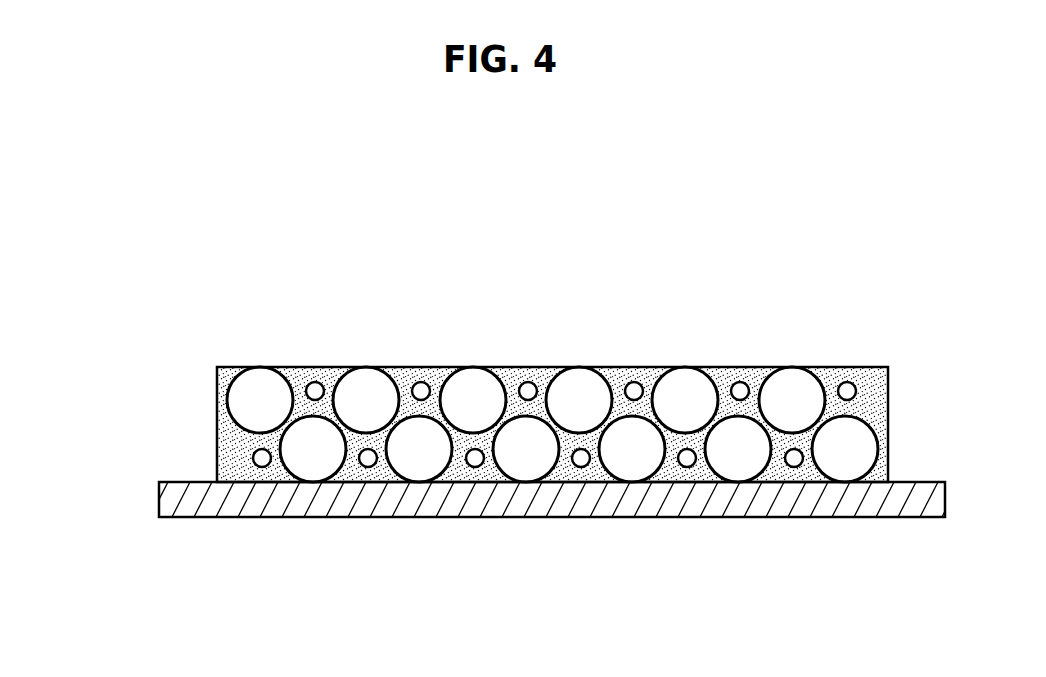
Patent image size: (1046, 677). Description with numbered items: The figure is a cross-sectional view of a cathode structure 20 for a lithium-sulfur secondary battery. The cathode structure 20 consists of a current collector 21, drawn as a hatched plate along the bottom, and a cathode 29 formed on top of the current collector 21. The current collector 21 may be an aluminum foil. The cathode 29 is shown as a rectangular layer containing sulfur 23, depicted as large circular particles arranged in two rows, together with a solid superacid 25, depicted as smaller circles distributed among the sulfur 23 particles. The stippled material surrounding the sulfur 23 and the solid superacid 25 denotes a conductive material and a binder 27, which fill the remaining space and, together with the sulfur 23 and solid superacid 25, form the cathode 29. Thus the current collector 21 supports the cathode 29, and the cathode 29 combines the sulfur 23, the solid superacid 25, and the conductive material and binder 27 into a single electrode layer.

The cathode structure 20 is at (506, 424).
The current collector 21 is at (580, 505).
The sulfur 23 is at (260, 388).
The solid superacid 25 is at (316, 382).
The conductive material and binder 27 is at (618, 378).
The cathode 29 is at (217, 423).